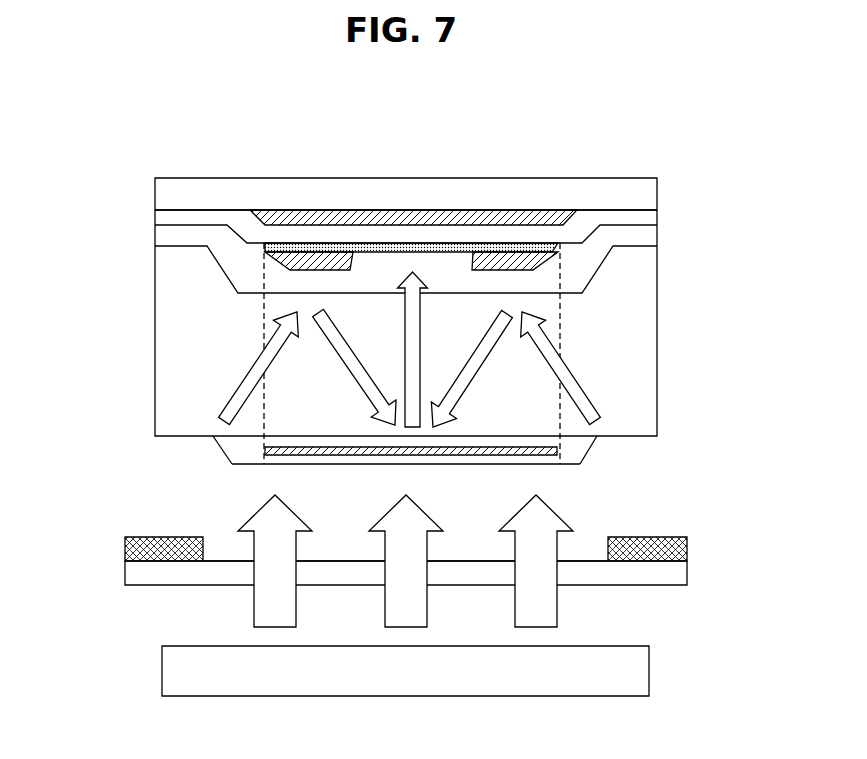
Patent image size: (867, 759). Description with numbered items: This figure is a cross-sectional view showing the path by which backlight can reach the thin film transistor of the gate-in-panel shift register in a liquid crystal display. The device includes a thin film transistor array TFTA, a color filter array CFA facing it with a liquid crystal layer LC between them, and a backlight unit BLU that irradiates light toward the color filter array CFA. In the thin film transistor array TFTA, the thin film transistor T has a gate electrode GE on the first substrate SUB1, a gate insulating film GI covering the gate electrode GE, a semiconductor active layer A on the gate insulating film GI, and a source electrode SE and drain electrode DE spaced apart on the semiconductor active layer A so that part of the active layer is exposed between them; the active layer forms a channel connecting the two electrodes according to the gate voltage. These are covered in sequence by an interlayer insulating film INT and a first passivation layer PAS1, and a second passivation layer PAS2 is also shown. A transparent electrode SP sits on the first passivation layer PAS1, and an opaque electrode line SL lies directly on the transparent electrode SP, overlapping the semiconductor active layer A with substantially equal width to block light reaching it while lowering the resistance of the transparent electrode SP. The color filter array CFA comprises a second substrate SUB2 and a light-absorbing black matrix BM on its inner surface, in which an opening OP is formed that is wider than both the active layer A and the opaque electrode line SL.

The thin film transistor array TFTA is at (147, 332).
The first substrate SUB1 is at (645, 189).
The gate insulating film GI is at (645, 220).
The interlayer insulating film INT is at (645, 233).
The first passivation layer PAS1 is at (645, 324).
The thin film transistor T is at (317, 121).
The gate electrode GE is at (447, 218).
The semiconductor active layer A is at (386, 247).
The source electrode SE is at (322, 255).
The drain electrode DE is at (497, 258).
The transparent electrode SP is at (548, 441).
The second passivation layer PAS2 is at (573, 453).
The opaque electrode line SL is at (550, 465).
The liquid crystal layer LC is at (381, 547).
The color filter array CFA is at (110, 561).
The second substrate SUB2 is at (690, 575).
The black matrix BM is at (135, 550).
The opening OP is at (216, 547).
The backlight unit BLU is at (150, 672).